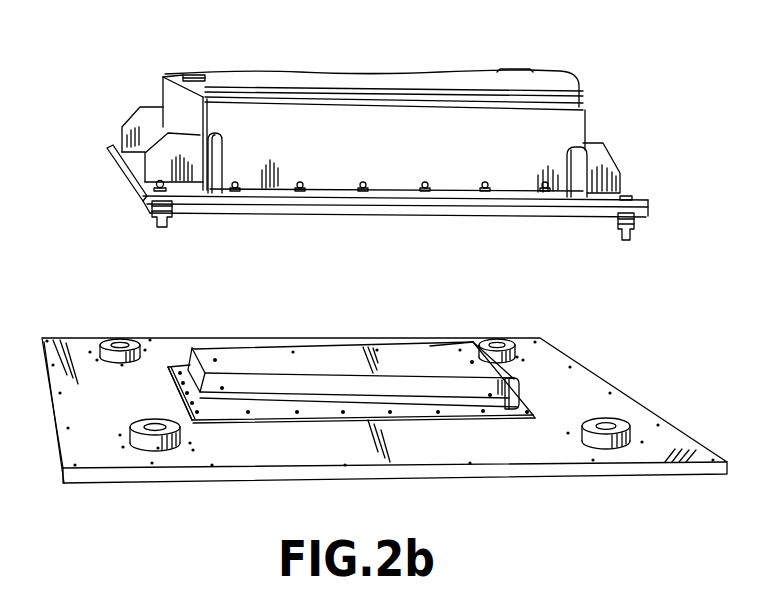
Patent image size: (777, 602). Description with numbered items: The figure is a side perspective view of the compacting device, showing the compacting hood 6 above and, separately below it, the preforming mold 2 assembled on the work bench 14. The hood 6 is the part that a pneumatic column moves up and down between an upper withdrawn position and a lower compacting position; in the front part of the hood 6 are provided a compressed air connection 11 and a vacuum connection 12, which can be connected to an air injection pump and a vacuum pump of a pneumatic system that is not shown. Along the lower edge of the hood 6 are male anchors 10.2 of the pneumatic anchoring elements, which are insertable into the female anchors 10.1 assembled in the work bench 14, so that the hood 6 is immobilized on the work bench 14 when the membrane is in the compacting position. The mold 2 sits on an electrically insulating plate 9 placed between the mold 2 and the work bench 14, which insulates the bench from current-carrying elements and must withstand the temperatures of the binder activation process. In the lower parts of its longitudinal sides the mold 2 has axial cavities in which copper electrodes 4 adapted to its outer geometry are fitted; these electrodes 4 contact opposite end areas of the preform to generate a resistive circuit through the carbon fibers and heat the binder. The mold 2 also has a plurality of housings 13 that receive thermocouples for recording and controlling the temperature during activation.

The preforming mold 2 is at (469, 349).
The copper electrodes 4 is at (414, 402).
The compacting hood 6 is at (602, 111).
The electrically insulating plate 9 is at (184, 365).
The female anchor 10.1 is at (150, 434).
The male anchor 10.2 is at (151, 211).
The compressed air connection 11 is at (181, 99).
The vacuum connection 12 is at (184, 75).
The housings 13 is at (490, 395).
The work bench 14 is at (589, 387).